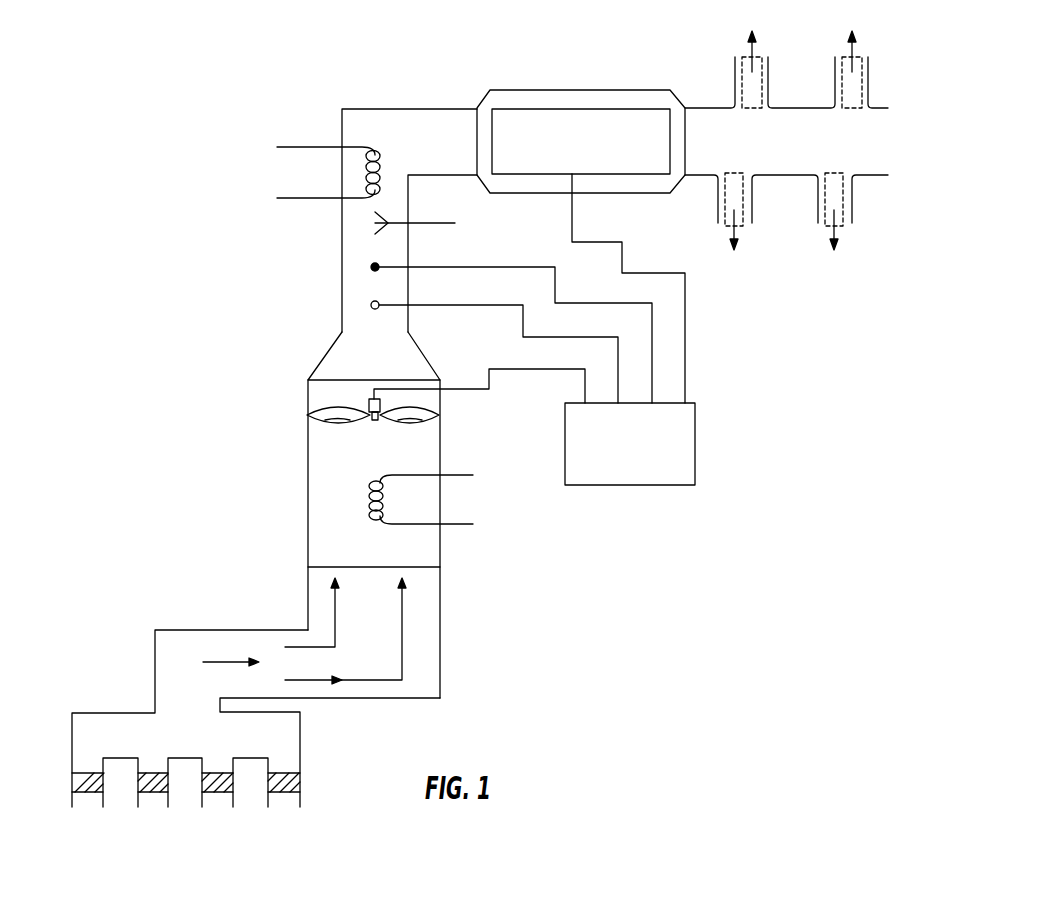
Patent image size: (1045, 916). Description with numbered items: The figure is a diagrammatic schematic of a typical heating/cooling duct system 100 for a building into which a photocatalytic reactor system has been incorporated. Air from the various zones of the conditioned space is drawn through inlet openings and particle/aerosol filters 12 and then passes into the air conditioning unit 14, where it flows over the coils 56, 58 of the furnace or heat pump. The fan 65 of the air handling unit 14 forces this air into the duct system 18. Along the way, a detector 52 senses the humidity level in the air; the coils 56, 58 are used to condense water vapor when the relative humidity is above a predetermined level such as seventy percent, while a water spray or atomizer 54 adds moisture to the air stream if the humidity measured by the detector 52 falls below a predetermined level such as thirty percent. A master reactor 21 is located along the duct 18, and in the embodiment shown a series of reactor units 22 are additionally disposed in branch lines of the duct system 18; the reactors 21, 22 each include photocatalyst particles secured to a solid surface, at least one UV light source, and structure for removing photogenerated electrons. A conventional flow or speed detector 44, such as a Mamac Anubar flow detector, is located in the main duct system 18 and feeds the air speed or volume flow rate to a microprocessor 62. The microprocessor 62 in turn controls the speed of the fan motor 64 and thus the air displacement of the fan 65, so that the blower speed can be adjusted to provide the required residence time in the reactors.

The heating/cooling duct system 100 is at (240, 195).
The particle/aerosol filters 12 is at (151, 773).
The air conditioning unit 14 is at (298, 458).
The duct system 18 is at (413, 107).
The master reactor 21 is at (558, 88).
The reactor units 22 is at (760, 76).
The flow or speed detector 44 is at (371, 263).
The detector 52 is at (371, 305).
The water spray or atomizer 54 is at (436, 224).
The coil 56 is at (369, 497).
The coil 58 is at (385, 154).
The microprocessor 62 is at (630, 444).
The fan motor 64 is at (369, 399).
The fan 65 is at (440, 416).